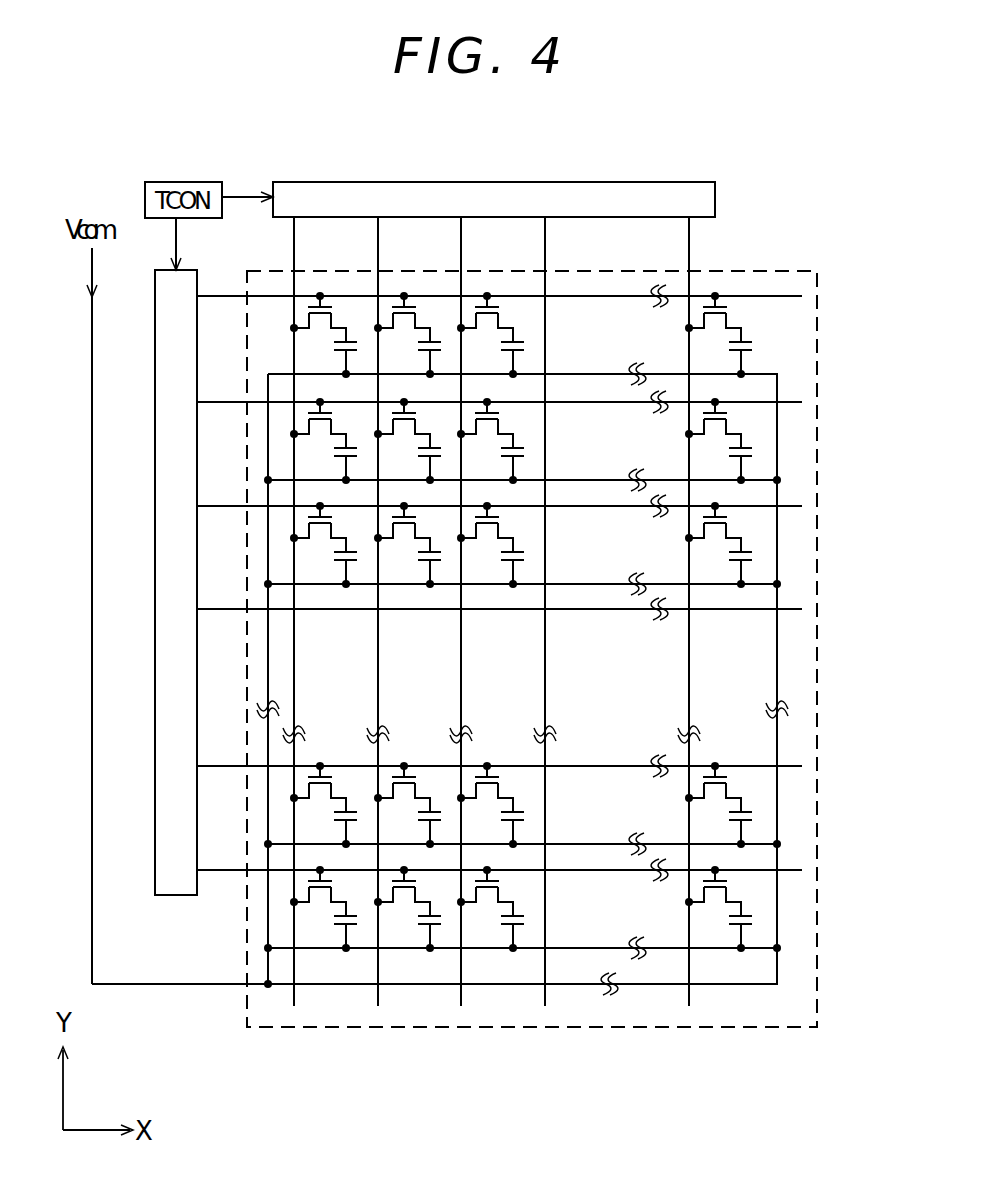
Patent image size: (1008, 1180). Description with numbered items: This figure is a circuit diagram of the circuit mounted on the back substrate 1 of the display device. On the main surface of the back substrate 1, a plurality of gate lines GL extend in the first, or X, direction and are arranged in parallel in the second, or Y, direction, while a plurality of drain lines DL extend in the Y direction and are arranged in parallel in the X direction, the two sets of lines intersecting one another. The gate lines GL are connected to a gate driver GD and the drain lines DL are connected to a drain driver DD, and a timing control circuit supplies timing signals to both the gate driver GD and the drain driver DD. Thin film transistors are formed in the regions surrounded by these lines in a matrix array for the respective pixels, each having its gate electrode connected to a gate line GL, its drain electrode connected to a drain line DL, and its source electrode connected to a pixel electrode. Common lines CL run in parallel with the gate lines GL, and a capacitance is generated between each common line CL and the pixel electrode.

The drain driver DD is at (545, 181).
The gate driver GD is at (175, 896).
The gate line GL is at (788, 292).
The drain line DL is at (527, 654).
The common line CL is at (178, 988).
The back substrate 1 is at (278, 1029).